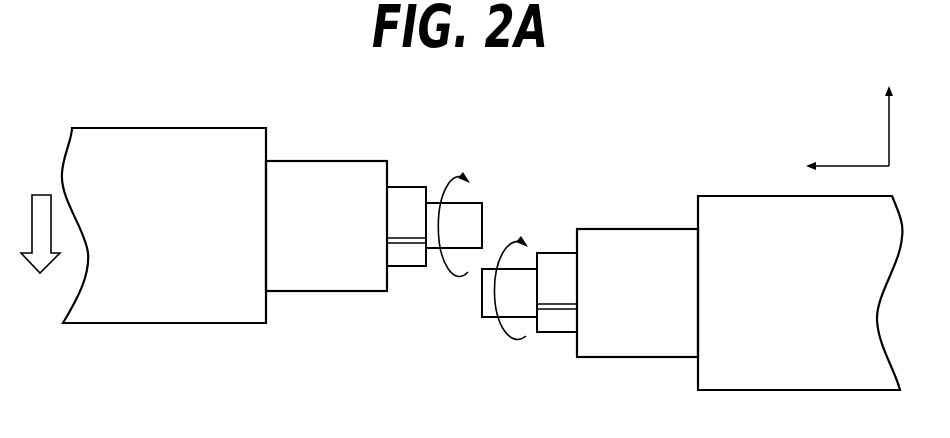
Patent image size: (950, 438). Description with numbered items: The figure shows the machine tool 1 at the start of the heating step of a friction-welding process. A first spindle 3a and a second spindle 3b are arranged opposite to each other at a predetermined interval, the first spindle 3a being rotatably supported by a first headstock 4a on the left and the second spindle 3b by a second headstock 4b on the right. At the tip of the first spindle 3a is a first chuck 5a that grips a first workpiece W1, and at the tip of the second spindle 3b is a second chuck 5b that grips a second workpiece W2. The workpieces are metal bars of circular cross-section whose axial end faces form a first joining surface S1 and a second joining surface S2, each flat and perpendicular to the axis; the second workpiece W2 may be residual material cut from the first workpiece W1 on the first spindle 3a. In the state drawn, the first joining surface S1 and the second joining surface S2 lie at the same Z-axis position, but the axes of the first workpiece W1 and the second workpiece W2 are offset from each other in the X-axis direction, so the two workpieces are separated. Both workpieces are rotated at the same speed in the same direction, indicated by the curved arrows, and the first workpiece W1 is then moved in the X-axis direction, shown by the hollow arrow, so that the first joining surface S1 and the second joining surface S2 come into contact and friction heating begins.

The machine tool 1 is at (657, 88).
The first spindle 3a is at (312, 177).
The second spindle 3b is at (635, 245).
The first headstock 4a is at (186, 143).
The second headstock 4b is at (742, 210).
The first chuck 5a is at (410, 200).
The second chuck 5b is at (563, 268).
The first workpiece W1 is at (470, 218).
The second workpiece W2 is at (527, 285).
The first joining surface S1 is at (482, 216).
The second joining surface S2 is at (482, 298).